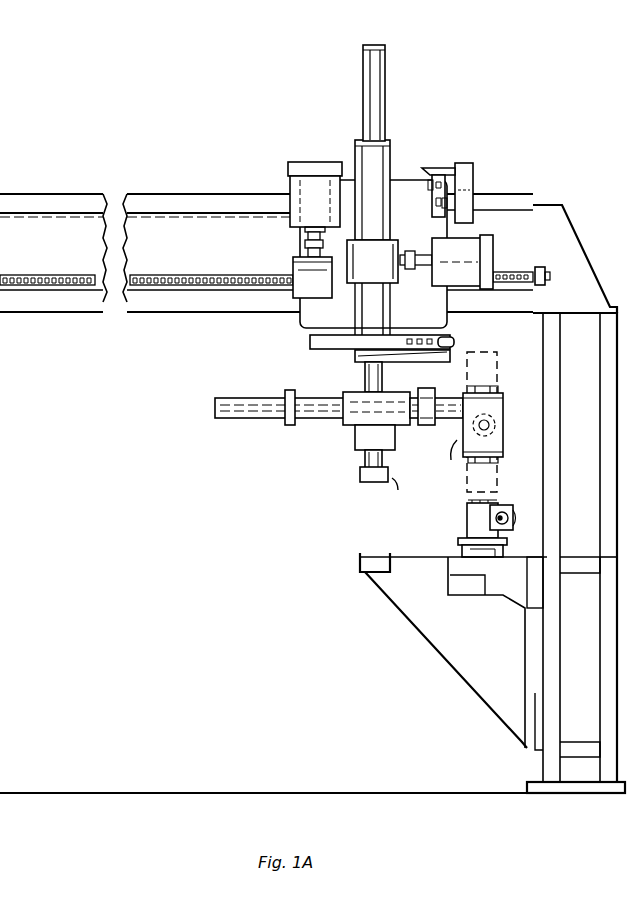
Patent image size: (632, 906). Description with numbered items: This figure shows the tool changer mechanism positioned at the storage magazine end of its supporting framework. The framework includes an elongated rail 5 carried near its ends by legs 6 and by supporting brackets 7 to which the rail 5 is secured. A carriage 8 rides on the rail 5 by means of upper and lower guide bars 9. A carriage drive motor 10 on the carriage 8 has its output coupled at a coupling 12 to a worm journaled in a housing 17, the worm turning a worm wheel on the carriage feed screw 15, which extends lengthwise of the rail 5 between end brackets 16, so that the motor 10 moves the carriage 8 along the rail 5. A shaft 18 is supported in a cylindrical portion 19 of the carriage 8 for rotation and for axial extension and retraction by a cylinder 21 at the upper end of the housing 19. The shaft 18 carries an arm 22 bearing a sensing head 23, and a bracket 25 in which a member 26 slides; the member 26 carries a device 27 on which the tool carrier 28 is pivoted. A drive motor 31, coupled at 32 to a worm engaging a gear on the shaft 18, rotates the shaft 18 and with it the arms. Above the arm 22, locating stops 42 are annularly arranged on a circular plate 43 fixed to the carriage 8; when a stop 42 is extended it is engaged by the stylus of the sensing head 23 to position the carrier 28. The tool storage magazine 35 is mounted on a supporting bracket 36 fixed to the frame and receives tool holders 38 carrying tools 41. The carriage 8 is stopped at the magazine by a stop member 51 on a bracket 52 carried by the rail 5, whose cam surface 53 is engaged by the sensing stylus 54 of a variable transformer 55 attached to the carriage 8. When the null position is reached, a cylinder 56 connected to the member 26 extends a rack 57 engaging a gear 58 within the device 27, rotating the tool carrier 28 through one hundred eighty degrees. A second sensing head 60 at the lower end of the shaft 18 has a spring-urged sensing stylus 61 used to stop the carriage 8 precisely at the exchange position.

The rail 5 is at (266, 251).
The legs 6 is at (545, 470).
The supporting brackets 7 is at (553, 209).
The carriage 8 is at (392, 180).
The guide bars 9 is at (55, 195).
The carriage drive motor 10 is at (298, 173).
The coupling 12 is at (306, 242).
The carriage feed screw 15 is at (159, 272).
The end brackets 16 is at (541, 271).
The housing 17 is at (294, 268).
The shaft 18 is at (363, 388).
The cylindrical portion 19 is at (355, 160).
The cylinder 21 is at (385, 60).
The arm 22 is at (396, 364).
The sensing head 23 is at (455, 347).
The bracket 25 is at (348, 428).
The member 26 is at (297, 428).
The device 27 is at (503, 403).
The tool carrier 28 is at (459, 464).
The drive motor 31 is at (490, 248).
The coupling 32 is at (372, 261).
The tool storage magazine 35 is at (402, 543).
The supporting bracket 36 is at (428, 632).
The tool holder 38 is at (466, 518).
The tool 41 is at (514, 520).
The locating stops 42 is at (432, 312).
The circular plate 43 is at (310, 342).
The stop member 51 is at (444, 174).
The bracket 52 is at (472, 182).
The cam surface 53 is at (425, 167).
The sensing stylus 54 is at (428, 192).
The variable transformer 55 is at (442, 206).
The cylinder 56 is at (247, 402).
The rack 57 is at (404, 422).
The gear 58 is at (503, 442).
The sensing head 60 is at (391, 478).
The sensing stylus 61 is at (359, 480).